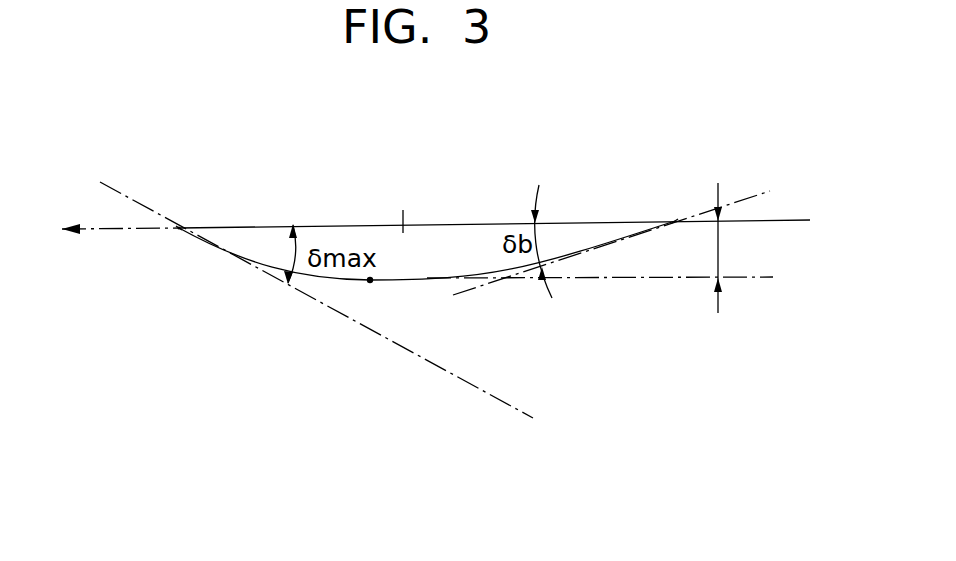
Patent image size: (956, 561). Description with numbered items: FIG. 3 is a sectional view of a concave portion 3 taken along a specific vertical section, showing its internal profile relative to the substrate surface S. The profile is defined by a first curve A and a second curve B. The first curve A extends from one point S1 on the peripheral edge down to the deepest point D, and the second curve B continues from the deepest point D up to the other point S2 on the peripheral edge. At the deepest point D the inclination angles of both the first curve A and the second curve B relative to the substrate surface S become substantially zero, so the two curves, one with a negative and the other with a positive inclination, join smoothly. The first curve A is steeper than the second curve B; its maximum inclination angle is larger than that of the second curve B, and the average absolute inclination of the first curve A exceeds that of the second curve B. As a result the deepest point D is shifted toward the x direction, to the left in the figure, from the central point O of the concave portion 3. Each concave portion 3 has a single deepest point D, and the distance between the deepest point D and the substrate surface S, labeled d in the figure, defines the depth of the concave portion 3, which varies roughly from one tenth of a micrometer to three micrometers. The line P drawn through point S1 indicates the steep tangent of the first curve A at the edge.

The concave portion 3 is at (393, 283).
The substrate surface S is at (790, 220).
The one point on the peripheral edge S1 is at (180, 223).
The other point on the peripheral edge S2 is at (675, 220).
The tangent line at point A P is at (103, 177).
The first curve A is at (193, 238).
The second curve B is at (650, 235).
The deepest point D is at (369, 298).
The central point O is at (403, 209).
The depth at point B d is at (728, 248).
The x direction x is at (111, 229).